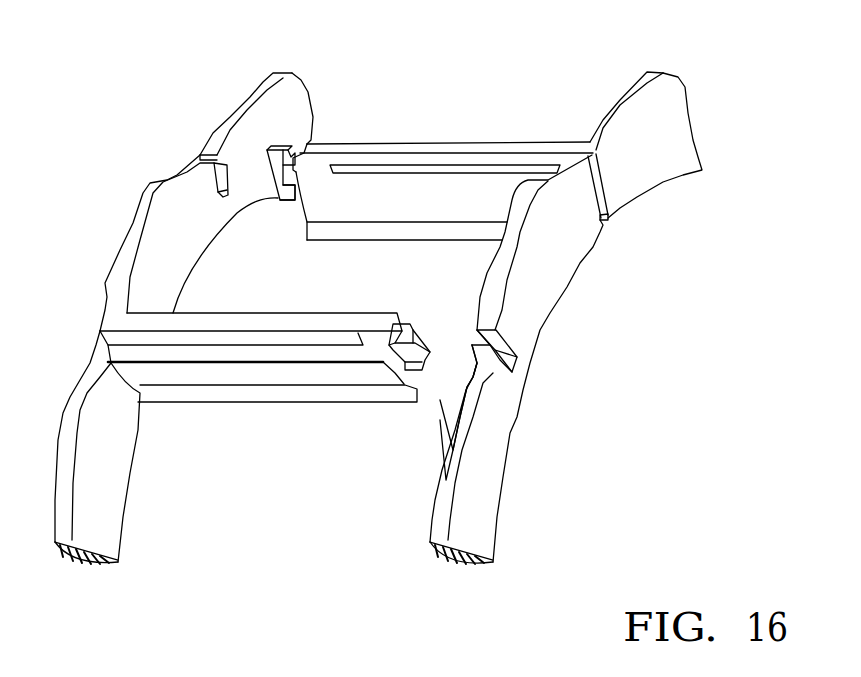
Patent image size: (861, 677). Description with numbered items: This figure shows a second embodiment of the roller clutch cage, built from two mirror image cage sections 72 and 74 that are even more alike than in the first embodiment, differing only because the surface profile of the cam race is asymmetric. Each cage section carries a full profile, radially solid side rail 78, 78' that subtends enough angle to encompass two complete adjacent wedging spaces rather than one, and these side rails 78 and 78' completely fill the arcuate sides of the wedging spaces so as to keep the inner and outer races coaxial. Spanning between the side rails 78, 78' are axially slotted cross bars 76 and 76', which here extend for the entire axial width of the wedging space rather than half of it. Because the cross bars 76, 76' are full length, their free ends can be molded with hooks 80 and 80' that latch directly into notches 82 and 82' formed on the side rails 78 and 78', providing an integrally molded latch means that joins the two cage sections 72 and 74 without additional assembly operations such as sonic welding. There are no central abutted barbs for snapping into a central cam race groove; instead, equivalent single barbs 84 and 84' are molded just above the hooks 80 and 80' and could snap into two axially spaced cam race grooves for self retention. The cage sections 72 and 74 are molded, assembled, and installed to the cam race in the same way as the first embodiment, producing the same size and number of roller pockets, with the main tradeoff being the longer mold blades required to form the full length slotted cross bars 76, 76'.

The cage section 72 is at (241, 98).
The cage section 74 is at (685, 97).
The slotted cross bar 76 is at (258, 390).
The slotted cross bar 76' is at (443, 144).
The side rail 78 is at (160, 359).
The side rail 78' is at (559, 359).
The hook 80 is at (402, 406).
The hook 80' is at (272, 236).
The notch 82 is at (168, 166).
The notch 82' is at (565, 351).
The barb 84 is at (420, 313).
The barb 84' is at (329, 128).